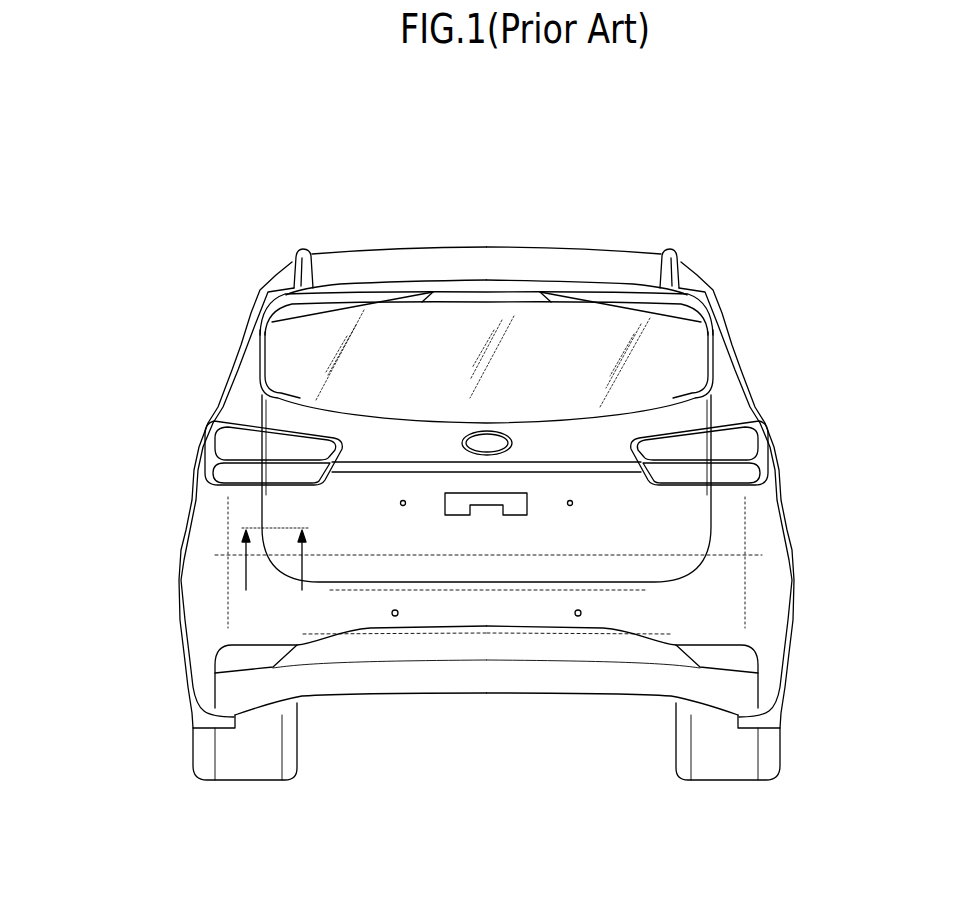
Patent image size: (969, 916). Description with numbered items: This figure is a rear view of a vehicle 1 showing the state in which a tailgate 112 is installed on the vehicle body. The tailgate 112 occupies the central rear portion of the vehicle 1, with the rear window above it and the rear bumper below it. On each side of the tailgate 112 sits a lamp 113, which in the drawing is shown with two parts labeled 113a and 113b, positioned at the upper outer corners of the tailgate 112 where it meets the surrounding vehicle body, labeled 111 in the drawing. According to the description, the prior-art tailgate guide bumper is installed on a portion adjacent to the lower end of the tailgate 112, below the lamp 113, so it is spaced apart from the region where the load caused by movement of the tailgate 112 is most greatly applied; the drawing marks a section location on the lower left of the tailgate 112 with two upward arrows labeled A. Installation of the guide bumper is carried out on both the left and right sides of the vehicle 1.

The vehicle 1 is at (765, 187).
The vehicle body rear quarter panel 111 is at (243, 510).
The tailgate 112 is at (675, 525).
The lamp 113 is at (395, 420).
The lamp housing 113a is at (233, 441).
The lamp lens 113b is at (312, 447).